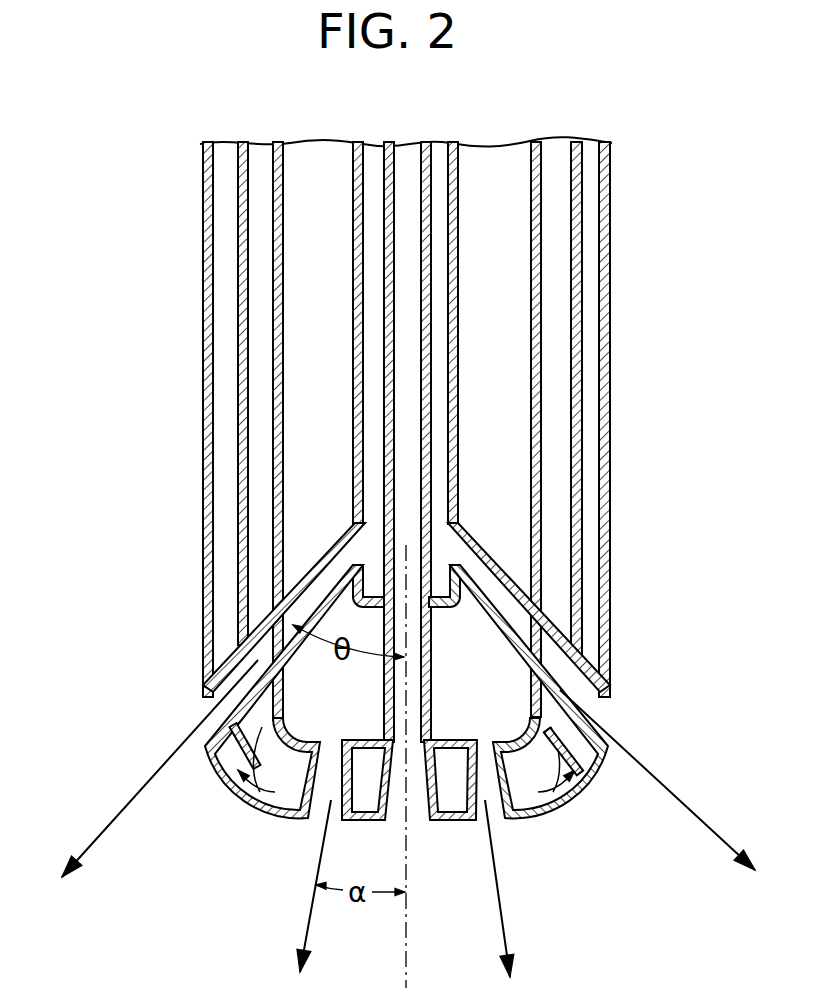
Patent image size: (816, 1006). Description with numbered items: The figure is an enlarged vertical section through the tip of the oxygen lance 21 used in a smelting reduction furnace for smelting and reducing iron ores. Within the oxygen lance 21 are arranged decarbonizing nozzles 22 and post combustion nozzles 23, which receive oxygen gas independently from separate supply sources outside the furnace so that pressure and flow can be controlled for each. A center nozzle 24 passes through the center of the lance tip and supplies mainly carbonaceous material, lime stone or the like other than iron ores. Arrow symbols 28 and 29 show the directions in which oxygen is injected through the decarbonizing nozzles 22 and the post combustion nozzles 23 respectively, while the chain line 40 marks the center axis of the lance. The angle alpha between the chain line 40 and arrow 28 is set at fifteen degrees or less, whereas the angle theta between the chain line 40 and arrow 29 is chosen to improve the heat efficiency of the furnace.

The oxygen lance 21 is at (610, 385).
The decarbonizing nozzles 22 is at (318, 818).
The post combustion nozzles 23 is at (210, 702).
The center nozzle 24 is at (413, 820).
The arrow symbol 28 is at (310, 917).
The arrow symbol 29 is at (120, 812).
The chain line 40 is at (407, 948).